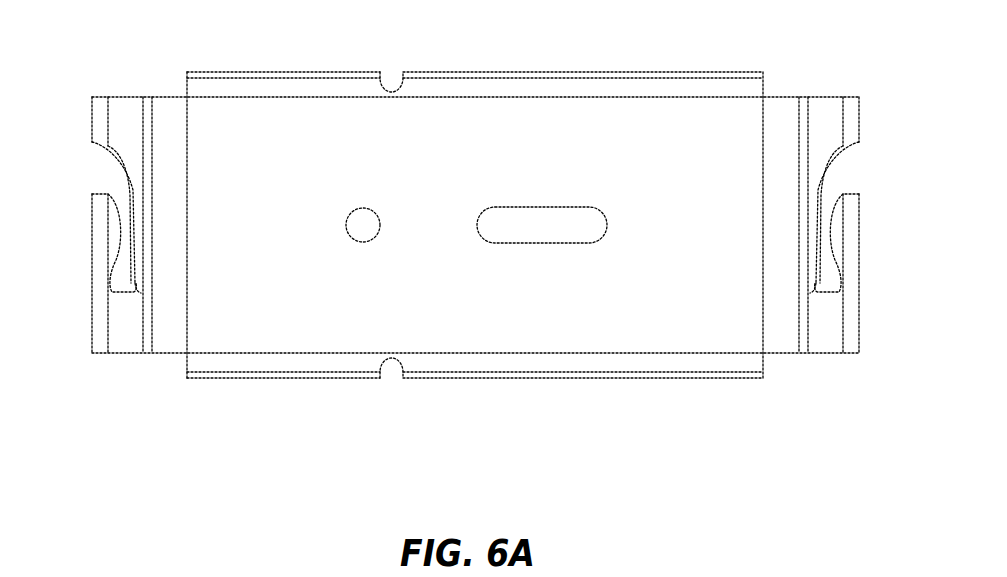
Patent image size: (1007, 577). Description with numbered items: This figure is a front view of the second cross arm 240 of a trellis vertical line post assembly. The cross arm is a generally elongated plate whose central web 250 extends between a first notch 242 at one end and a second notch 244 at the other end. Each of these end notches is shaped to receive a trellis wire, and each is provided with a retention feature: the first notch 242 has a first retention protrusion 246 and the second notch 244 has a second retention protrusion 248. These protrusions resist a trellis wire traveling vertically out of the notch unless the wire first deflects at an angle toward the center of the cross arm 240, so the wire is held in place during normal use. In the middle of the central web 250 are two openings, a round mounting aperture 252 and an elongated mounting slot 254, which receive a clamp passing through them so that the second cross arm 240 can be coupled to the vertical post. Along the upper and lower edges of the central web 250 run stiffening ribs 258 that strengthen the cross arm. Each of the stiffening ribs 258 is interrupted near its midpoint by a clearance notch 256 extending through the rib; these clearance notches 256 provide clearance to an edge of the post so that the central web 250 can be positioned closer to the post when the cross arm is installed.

The second cross arm 240 is at (610, 333).
The first notch 242 is at (852, 162).
The second notch 244 is at (96, 166).
The first retention protrusion 246 is at (838, 232).
The second retention protrusion 248 is at (115, 238).
The central web 250 is at (250, 336).
The mounting aperture 252 is at (363, 208).
The mounting slot 254 is at (563, 207).
The clearance notches 256 is at (402, 82).
The stiffening ribs 258 is at (645, 75).